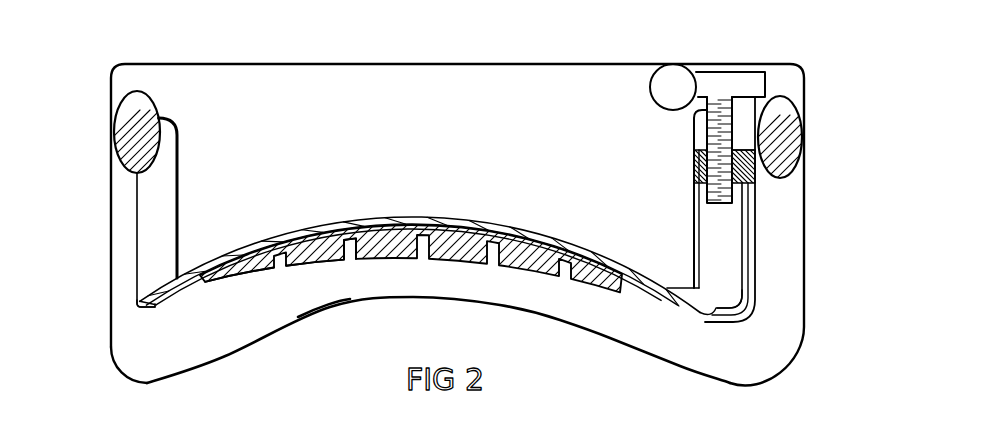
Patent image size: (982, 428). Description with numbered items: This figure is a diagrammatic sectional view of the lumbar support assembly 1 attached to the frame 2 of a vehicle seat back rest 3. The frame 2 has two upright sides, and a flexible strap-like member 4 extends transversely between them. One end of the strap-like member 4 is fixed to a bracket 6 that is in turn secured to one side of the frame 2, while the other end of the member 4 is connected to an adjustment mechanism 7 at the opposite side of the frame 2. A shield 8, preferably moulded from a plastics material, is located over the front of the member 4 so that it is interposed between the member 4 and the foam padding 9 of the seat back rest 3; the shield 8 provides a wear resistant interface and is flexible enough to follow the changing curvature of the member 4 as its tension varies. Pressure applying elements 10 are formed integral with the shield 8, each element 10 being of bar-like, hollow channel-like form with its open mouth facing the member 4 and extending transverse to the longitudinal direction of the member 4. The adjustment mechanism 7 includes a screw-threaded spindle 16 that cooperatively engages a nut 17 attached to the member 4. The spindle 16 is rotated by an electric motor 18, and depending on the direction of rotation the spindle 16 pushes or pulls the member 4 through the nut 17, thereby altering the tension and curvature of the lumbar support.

The lumbar support assembly 1 is at (499, 283).
The frame 2 is at (130, 123).
The vehicle seat back rest 3 is at (385, 306).
The upper strap-like member 4 is at (157, 304).
The bracket 6 is at (150, 224).
The adjustment mechanism 7 is at (664, 130).
The shield 8 is at (424, 256).
The foam padding 9 is at (322, 288).
The pressure applying element 10 is at (305, 264).
The screw-threaded spindle 16 is at (686, 197).
The nut 17 is at (694, 165).
The electric motor 18 is at (673, 84).